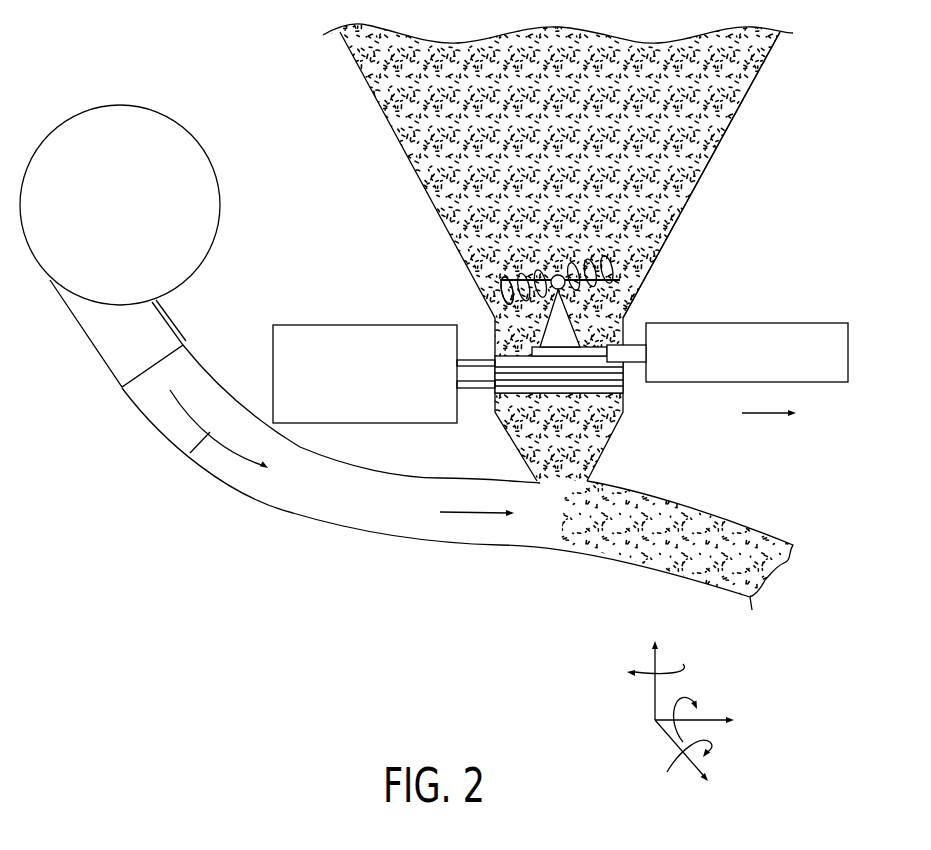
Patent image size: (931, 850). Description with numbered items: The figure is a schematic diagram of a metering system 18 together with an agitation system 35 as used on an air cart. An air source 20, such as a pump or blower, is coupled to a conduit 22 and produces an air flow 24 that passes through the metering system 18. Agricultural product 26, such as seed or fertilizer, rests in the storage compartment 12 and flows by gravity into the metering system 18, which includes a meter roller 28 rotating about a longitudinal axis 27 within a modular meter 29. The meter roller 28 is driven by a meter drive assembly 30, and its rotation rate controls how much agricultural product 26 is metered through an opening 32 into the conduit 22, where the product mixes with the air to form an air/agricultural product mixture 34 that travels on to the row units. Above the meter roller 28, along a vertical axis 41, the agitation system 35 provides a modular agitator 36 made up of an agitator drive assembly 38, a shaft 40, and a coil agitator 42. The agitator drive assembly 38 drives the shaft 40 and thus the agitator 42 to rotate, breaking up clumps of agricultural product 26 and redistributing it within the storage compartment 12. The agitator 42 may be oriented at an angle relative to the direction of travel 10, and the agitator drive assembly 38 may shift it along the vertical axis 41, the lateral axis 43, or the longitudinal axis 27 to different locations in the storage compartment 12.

The direction of travel 10 is at (763, 415).
The storage compartment 12 is at (361, 72).
The metering system 18 is at (766, 491).
The air source 20 is at (119, 104).
The conduit 22 is at (293, 513).
The air flow 24 is at (190, 453).
The agricultural product 26 is at (727, 88).
The longitudinal axis 27 is at (707, 725).
The meter roller 28 is at (587, 397).
The modular meter 29 is at (306, 300).
The meter drive assembly 30 is at (363, 325).
The opening 32 is at (565, 482).
The air/agricultural product mixture 34 is at (688, 552).
The agitation system 35 is at (702, 192).
The modular agitator 36 is at (618, 263).
The agitator drive assembly 38 is at (747, 323).
The shaft 40 is at (621, 283).
The vertical axis 41 is at (653, 688).
The agitator 42 is at (486, 270).
The lateral axis 43 is at (667, 735).